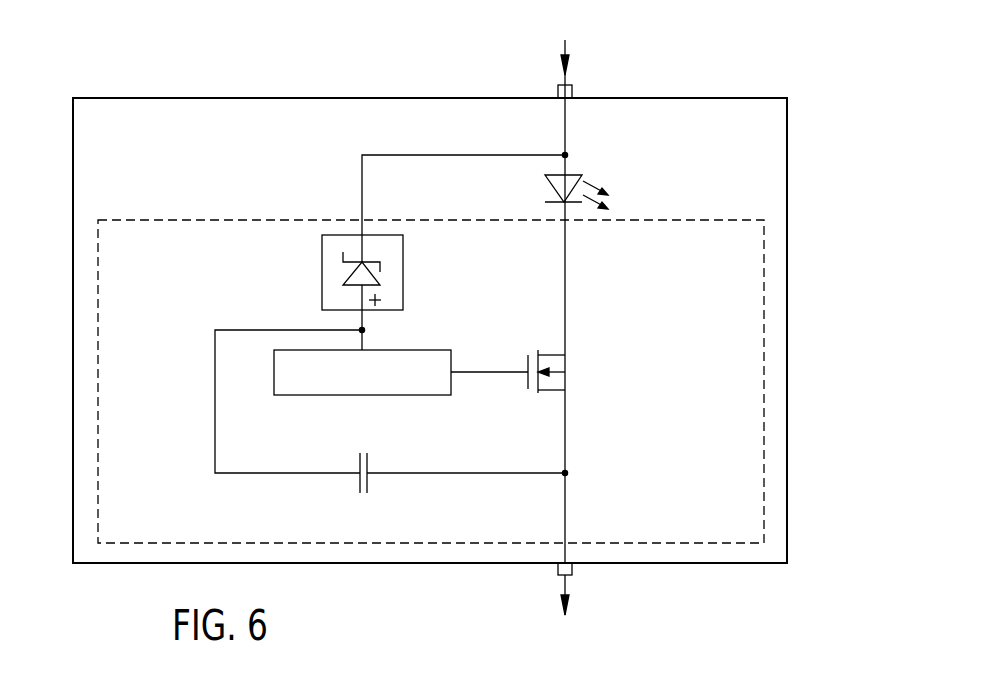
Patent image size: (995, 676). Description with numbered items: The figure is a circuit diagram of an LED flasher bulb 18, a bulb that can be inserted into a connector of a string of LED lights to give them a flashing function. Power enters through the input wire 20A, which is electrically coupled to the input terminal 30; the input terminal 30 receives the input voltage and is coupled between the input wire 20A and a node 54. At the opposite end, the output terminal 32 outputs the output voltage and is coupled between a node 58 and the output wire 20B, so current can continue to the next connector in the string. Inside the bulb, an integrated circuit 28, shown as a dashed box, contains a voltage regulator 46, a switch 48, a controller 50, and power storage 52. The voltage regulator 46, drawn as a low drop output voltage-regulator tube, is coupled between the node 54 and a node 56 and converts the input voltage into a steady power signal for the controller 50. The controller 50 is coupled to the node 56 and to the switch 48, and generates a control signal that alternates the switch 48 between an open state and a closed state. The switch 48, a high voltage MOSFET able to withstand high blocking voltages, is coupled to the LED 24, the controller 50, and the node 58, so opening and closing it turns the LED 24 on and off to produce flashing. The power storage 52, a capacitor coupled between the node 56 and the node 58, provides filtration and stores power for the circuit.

The LED flasher bulb 18 is at (183, 98).
The input wire 20A is at (567, 46).
The output wire 20B is at (563, 608).
The LED 24 is at (580, 173).
The integrated circuit 28 is at (98, 258).
The input terminal 30 is at (558, 92).
The output terminal 32 is at (558, 570).
The voltage regulator 46 is at (403, 262).
The switch 48 is at (567, 375).
The controller 50 is at (451, 357).
The power storage 52 is at (367, 462).
The node 54 is at (567, 153).
The node 56 is at (365, 330).
The node 58 is at (567, 471).